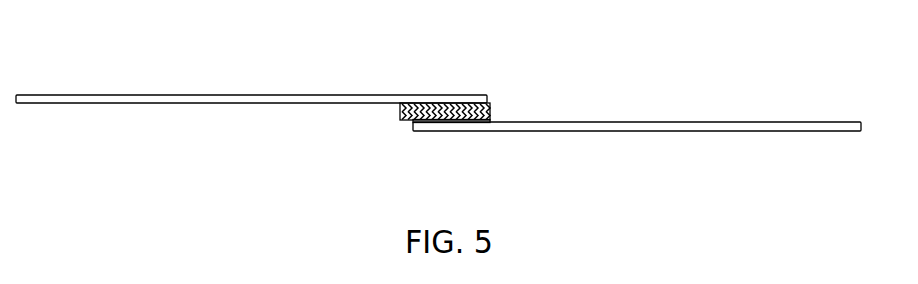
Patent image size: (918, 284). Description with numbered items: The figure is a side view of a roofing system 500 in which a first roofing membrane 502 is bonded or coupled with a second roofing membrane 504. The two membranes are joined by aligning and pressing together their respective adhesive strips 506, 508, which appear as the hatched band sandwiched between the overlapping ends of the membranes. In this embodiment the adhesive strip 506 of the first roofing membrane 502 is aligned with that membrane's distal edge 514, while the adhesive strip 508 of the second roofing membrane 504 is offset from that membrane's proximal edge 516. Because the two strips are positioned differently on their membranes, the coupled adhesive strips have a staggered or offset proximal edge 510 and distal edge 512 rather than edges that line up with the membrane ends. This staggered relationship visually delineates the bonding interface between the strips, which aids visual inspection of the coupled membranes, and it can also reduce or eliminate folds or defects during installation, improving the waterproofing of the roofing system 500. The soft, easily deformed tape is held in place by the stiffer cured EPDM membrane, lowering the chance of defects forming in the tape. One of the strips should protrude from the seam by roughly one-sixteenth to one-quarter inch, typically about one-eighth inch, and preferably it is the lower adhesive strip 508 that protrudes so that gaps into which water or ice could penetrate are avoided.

The roofing system 500 is at (651, 67).
The first roofing membrane 502 is at (285, 95).
The second roofing membrane 504 is at (653, 131).
The adhesive strip 506 is at (431, 107).
The adhesive strip 508 is at (422, 120).
The proximal edge of coupled adhesive strips 510 is at (393, 110).
The distal edge of coupled adhesive strips 512 is at (502, 108).
The distal edge 514 is at (491, 99).
The proximal edge 516 is at (410, 122).